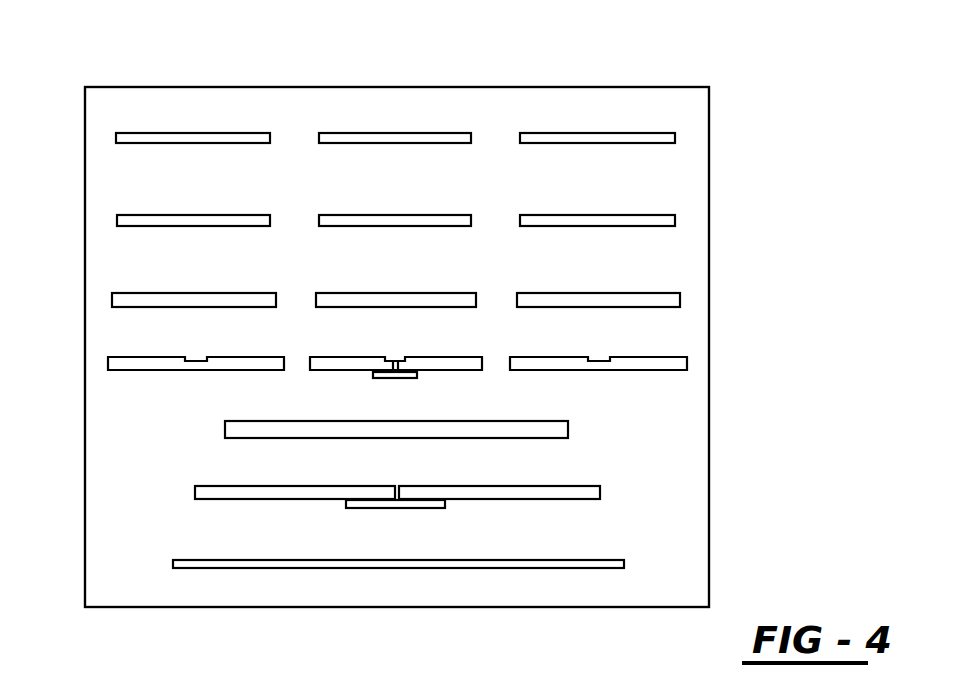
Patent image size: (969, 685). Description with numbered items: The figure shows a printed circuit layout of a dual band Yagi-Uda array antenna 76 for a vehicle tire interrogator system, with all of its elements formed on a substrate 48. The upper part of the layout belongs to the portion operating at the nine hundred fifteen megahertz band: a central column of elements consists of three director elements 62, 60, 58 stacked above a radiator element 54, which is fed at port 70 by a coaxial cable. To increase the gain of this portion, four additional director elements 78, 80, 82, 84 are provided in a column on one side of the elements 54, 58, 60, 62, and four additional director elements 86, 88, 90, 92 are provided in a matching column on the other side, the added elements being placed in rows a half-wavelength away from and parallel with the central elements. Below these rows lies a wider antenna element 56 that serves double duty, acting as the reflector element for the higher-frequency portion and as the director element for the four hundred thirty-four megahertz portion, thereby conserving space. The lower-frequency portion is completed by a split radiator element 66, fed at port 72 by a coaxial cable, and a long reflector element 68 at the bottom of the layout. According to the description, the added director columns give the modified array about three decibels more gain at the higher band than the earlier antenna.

The dual band Yagi-Uda array antenna 76 is at (768, 128).
The substrate 48 is at (687, 182).
The additional director element 78 is at (211, 133).
The director element 62 is at (395, 133).
The additional director element 86 is at (598, 133).
The additional director element 80 is at (148, 215).
The director element 60 is at (397, 215).
The additional director element 88 is at (598, 215).
The additional director element 82 is at (150, 293).
The director element 58 is at (417, 293).
The additional director element 90 is at (635, 293).
The additional director element 84 is at (128, 357).
The radiator element 54 is at (442, 357).
The additional director element 92 is at (650, 357).
The port 70 is at (378, 378).
The antenna element 56 is at (540, 421).
The radiator element 66 is at (555, 486).
The port 72 is at (428, 508).
The reflector element 68 is at (582, 560).